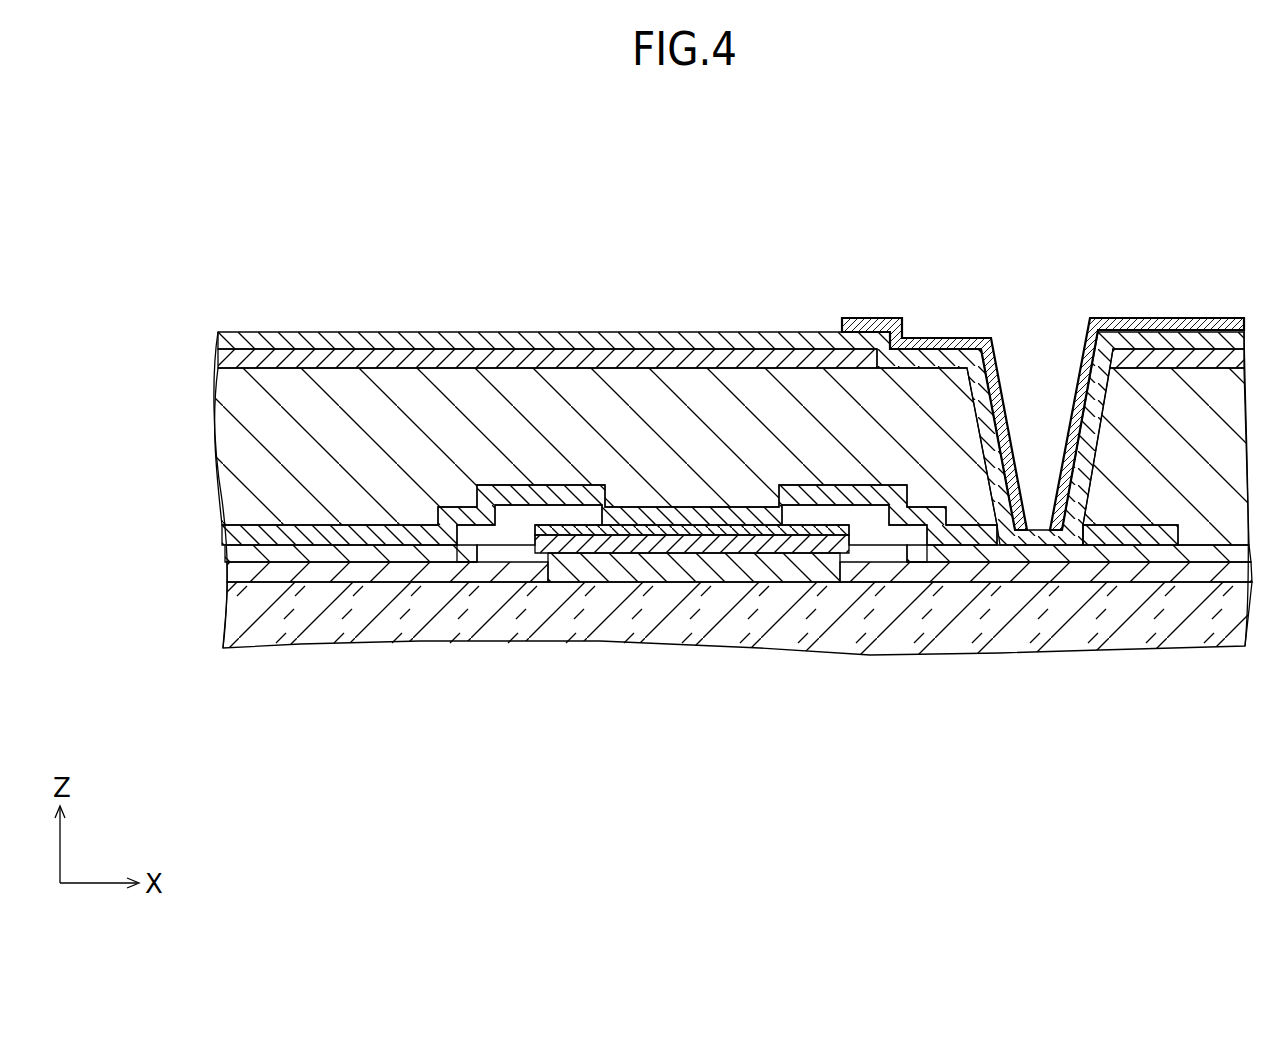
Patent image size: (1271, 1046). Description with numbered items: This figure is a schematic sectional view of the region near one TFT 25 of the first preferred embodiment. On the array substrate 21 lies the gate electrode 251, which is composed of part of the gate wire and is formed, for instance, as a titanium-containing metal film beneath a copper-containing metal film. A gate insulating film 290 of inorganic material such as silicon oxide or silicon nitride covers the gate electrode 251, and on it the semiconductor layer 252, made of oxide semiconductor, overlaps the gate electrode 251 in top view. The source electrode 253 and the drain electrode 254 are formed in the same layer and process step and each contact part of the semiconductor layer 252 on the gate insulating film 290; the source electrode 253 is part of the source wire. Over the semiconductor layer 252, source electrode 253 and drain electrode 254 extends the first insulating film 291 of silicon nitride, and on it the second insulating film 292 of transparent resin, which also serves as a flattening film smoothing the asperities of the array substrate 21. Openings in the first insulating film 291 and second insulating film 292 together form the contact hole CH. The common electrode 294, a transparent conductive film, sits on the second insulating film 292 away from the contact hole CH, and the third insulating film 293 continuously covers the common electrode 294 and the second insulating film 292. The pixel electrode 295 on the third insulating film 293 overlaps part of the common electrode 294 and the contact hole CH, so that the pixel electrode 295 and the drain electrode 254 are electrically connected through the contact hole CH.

The array substrate 21 is at (275, 630).
The TFT 25 is at (738, 476).
The gate electrode 251 is at (680, 565).
The semiconductor layer 252 is at (720, 535).
The source electrode 253 is at (548, 510).
The drain electrode 254 is at (815, 540).
The gate insulating film 290 is at (640, 548).
The first insulating film 291 is at (400, 540).
The second insulating film 292 is at (445, 420).
The third insulating film 293 is at (765, 348).
The common electrode 294 is at (580, 357).
The pixel electrode 295 is at (1180, 318).
The contact hole CH is at (1049, 322).